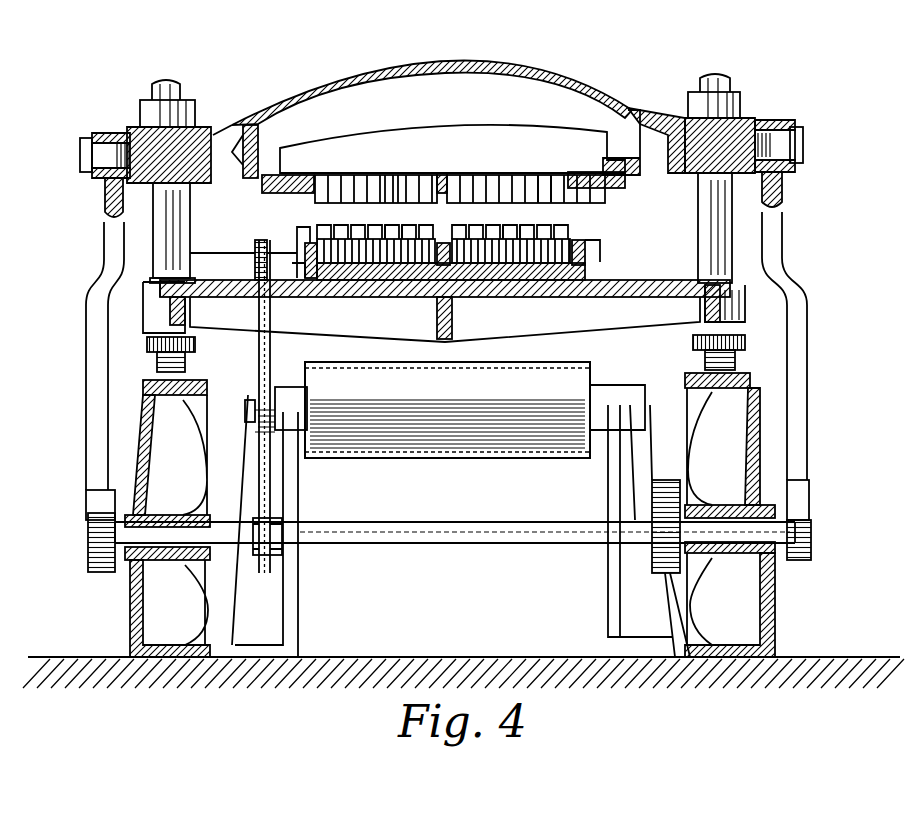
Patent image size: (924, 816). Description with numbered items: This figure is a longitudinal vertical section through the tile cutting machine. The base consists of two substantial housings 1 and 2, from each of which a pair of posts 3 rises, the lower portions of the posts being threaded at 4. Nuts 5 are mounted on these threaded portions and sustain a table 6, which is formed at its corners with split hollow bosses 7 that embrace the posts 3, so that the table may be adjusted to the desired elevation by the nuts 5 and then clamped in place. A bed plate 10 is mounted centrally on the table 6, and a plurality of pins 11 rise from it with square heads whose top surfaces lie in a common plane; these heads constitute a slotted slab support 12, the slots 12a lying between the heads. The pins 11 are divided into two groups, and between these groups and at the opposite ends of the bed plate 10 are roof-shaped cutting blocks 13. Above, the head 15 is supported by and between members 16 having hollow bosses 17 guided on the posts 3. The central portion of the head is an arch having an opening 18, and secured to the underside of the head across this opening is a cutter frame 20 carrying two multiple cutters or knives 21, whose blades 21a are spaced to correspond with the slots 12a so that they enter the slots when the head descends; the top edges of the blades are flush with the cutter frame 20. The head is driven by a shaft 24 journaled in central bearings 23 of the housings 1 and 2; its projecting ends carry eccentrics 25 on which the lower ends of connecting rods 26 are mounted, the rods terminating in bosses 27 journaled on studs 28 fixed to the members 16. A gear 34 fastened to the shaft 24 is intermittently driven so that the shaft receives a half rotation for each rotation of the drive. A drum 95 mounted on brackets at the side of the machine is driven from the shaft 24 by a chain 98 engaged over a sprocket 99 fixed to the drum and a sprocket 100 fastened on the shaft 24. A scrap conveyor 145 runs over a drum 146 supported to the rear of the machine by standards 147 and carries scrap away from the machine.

The housing 1 is at (130, 617).
The housing 2 is at (775, 590).
The post 3 is at (190, 210).
The threaded portion 4 is at (157, 366).
The nut 5 is at (147, 345).
The table 6 is at (578, 285).
The split hollow boss 7 is at (143, 312).
The bed plate 10 is at (408, 297).
The pin 11 is at (348, 280).
The slab support 12 is at (356, 226).
The slot 12a is at (410, 226).
The cutting block 13 is at (311, 243).
The head 15 is at (466, 62).
The member 16 is at (205, 127).
The hollow boss 17 is at (142, 110).
The opening 18 is at (437, 125).
The cutter frame 20 is at (312, 175).
The multiple cutter 21 is at (478, 175).
The blade 21a is at (410, 175).
The central bearing 23 is at (172, 515).
The shaft 24 is at (480, 543).
The eccentric 25 is at (88, 550).
The connecting rod 26 is at (86, 395).
The boss 27 is at (95, 134).
The stud 28 is at (80, 158).
The gear 34 is at (660, 575).
The drum 95 is at (297, 236).
The chain 98 is at (259, 366).
The sprocket 99 is at (255, 252).
The sprocket 100 is at (285, 548).
The scrap conveyor 145 is at (548, 362).
The drum 146 is at (490, 432).
The standard 147 is at (300, 493).